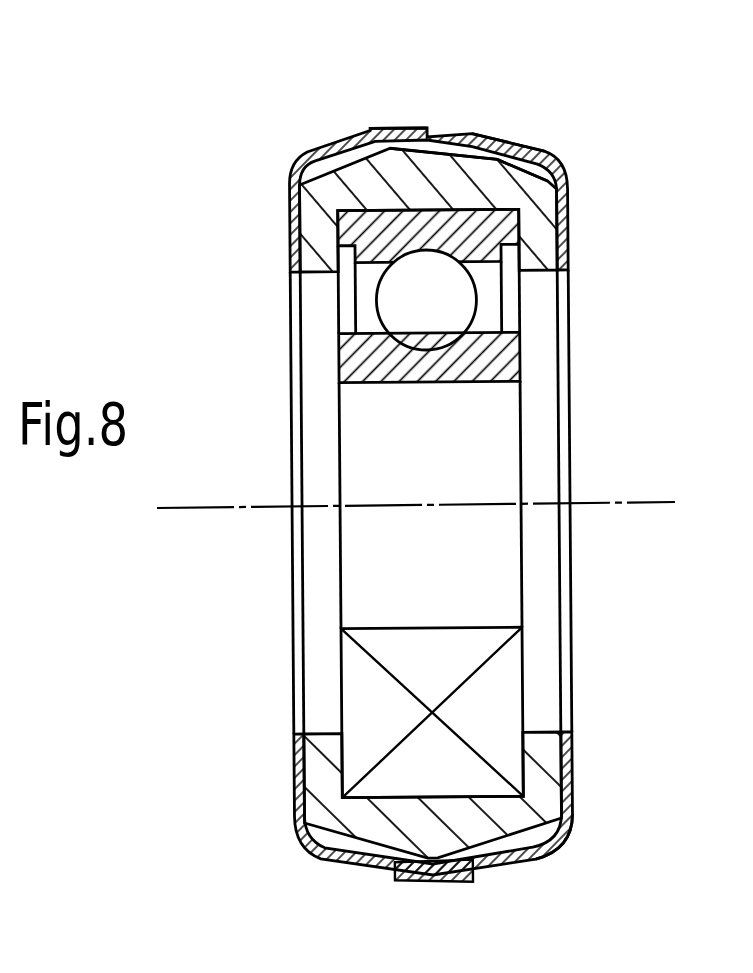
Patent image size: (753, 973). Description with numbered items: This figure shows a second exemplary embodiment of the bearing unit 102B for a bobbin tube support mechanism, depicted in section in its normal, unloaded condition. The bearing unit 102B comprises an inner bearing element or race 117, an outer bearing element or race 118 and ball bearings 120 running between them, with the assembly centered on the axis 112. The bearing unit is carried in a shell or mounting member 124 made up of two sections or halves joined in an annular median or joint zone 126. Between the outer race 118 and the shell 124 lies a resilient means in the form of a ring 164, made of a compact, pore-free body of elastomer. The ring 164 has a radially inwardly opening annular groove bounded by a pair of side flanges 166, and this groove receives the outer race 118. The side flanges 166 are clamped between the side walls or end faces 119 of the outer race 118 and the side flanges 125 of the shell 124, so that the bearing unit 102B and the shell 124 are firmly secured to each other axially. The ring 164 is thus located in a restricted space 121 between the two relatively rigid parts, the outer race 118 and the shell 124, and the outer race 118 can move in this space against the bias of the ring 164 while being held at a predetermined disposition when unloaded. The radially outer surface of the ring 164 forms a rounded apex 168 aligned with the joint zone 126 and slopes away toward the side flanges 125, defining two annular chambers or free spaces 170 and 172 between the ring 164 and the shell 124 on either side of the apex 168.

The bearing unit 102B is at (188, 265).
The axis 112 is at (653, 502).
The inner bearing element or race 117 is at (505, 356).
The outer bearing element or race 118 is at (497, 227).
The side walls or end faces 119 is at (352, 232).
The ball bearings 120 is at (453, 300).
The restricted space 121 is at (347, 167).
The shell or mounting member 124 is at (310, 157).
The side flanges 125 is at (543, 210).
The annular median or joint zone 126 is at (402, 118).
The resilient means or ring 164 is at (522, 160).
The side flanges 166 is at (323, 767).
The rounded apex 168 is at (423, 882).
The annular chamber or free space 170 is at (317, 858).
The annular chamber or free space 172 is at (565, 840).